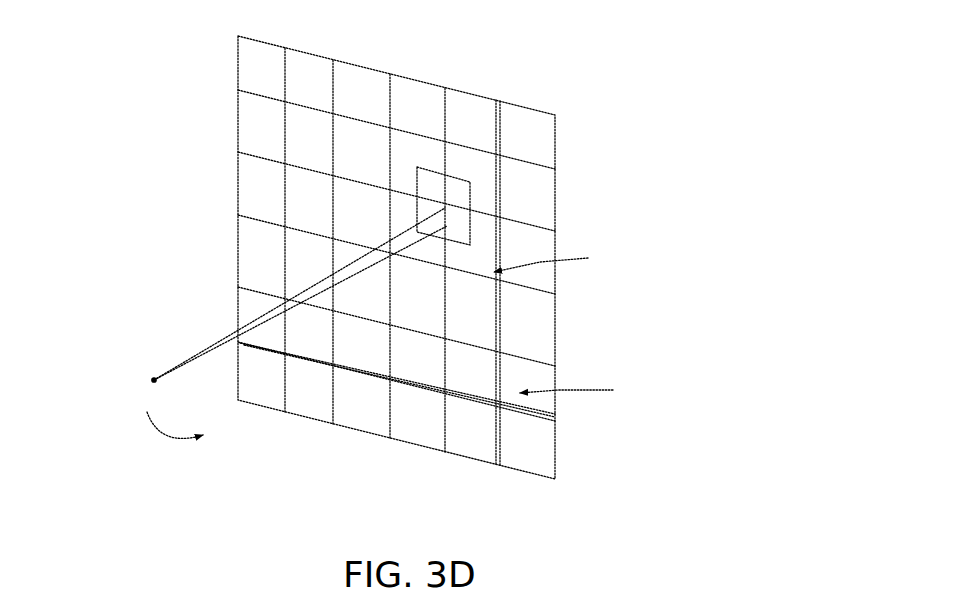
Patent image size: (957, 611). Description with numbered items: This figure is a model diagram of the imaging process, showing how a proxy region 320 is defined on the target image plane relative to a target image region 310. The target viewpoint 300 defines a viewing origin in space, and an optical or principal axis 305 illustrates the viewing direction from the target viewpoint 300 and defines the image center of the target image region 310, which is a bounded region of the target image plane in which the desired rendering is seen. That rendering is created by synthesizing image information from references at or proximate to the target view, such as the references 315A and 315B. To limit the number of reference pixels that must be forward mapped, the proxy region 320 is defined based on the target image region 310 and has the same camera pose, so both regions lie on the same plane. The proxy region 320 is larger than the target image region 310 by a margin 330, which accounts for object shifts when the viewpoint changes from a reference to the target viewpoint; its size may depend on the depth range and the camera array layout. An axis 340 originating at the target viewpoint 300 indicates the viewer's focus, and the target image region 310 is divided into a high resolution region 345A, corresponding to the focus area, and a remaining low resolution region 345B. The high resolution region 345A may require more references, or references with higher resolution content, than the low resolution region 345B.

The target viewpoint 300 is at (209, 401).
The optical or principal axis 305 is at (245, 333).
The target image region 310 is at (499, 181).
The reference 315A is at (150, 381).
The reference 315B is at (255, 428).
The proxy region 320 is at (553, 128).
The margin 330 is at (262, 53).
The axis 340 is at (213, 342).
The high resolution region 345A is at (470, 208).
The low resolution region 345B is at (483, 358).